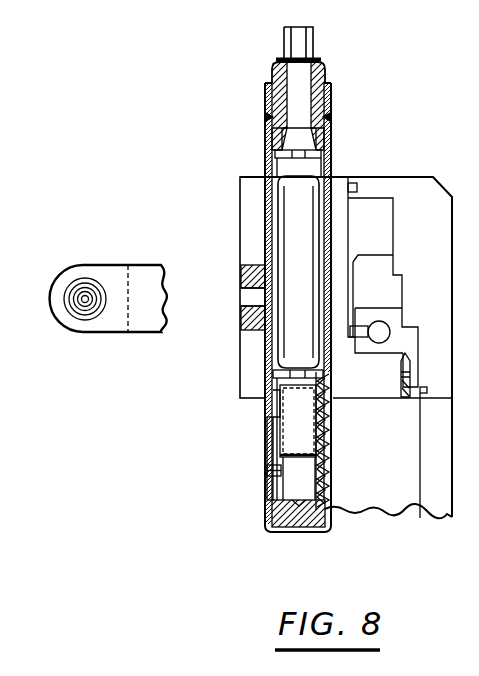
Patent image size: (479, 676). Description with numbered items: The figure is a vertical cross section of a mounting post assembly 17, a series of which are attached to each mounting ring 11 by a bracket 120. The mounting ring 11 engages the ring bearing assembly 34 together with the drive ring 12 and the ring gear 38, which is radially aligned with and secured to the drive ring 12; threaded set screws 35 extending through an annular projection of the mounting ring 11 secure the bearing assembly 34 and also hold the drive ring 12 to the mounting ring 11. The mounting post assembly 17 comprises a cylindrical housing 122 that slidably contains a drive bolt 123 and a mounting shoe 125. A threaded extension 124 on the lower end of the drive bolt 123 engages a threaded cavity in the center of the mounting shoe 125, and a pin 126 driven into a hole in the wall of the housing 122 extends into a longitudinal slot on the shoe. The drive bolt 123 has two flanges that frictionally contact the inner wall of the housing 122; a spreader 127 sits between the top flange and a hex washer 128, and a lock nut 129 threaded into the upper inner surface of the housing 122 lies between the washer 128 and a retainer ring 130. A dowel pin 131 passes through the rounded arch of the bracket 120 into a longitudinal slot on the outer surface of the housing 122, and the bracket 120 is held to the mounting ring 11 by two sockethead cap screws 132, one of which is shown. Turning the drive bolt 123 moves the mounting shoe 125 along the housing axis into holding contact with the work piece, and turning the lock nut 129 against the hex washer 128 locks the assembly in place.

The mounting ring 11 is at (249, 384).
The drive ring 12 is at (430, 260).
The mounting post assembly 17 is at (397, 139).
The ring bearing assembly 34 is at (364, 330).
The threaded set screws 35 is at (408, 399).
The ring gear 38 is at (392, 301).
The bracket 120 is at (222, 316).
The cylindrical housing 122 is at (270, 223).
The drive bolt 123 is at (293, 263).
The extension 124 is at (297, 430).
The mounting shoe 125 is at (283, 534).
The pin 126 is at (267, 472).
The spreader 127 is at (271, 152).
The hex washer 128 is at (266, 117).
The lock nut 129 is at (272, 72).
The retainer ring 130 is at (280, 59).
The dowel pin 131 is at (243, 297).
The sockethead cap screws 132 is at (87, 303).